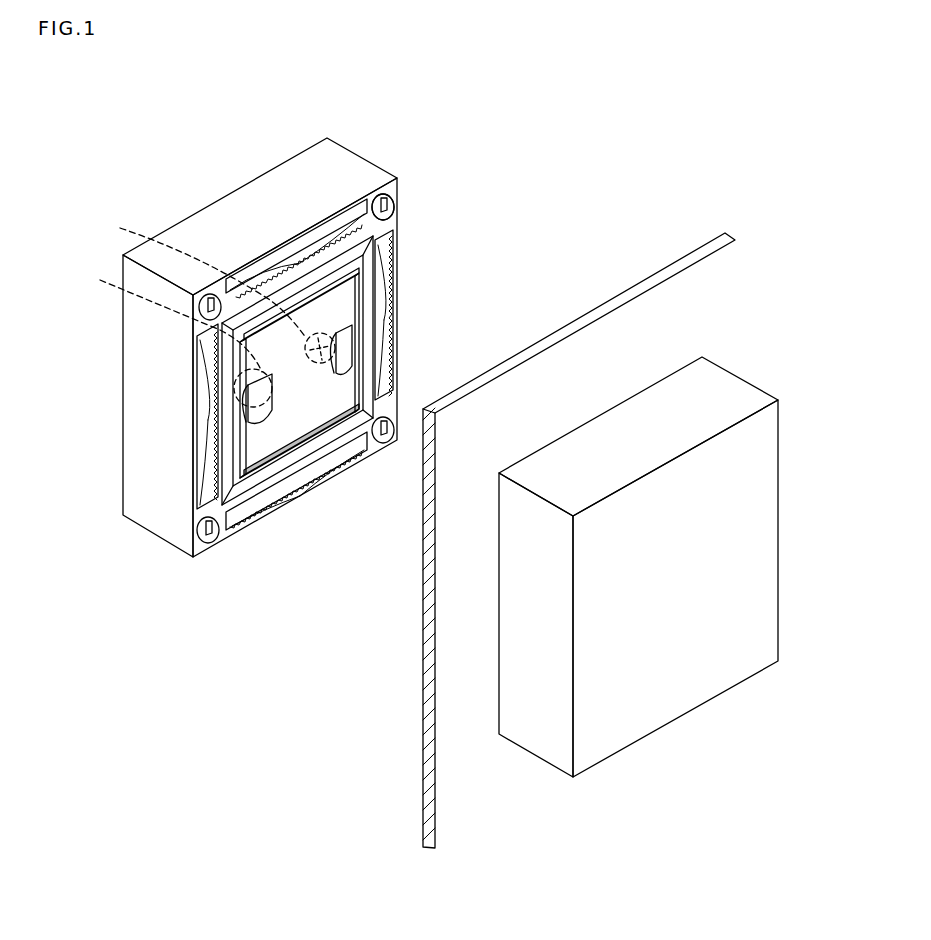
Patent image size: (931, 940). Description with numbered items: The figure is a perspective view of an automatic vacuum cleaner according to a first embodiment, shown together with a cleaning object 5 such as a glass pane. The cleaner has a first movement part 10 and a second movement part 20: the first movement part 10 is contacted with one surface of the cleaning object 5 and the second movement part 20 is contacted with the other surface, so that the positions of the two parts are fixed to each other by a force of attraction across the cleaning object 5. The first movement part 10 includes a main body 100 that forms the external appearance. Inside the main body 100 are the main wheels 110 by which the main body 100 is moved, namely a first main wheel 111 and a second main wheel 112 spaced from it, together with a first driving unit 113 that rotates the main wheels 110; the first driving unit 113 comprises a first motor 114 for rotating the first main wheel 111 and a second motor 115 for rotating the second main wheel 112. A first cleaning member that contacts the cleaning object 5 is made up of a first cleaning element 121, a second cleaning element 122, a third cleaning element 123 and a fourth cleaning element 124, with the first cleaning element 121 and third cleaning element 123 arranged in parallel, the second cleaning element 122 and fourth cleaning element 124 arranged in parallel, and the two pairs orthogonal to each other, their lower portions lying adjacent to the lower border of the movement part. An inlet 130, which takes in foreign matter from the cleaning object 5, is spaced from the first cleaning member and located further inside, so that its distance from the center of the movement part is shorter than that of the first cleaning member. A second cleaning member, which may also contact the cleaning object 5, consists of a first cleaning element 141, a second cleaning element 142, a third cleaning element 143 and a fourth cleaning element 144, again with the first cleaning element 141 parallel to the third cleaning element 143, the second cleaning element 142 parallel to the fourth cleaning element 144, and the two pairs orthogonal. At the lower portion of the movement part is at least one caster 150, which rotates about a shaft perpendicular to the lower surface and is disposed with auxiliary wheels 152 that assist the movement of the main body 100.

The cleaning object 5 is at (557, 363).
The first movement part 10 is at (430, 124).
The second movement part 20 is at (746, 357).
The main body 100 is at (195, 235).
The main wheels 110 is at (297, 455).
The first main wheel 111 is at (263, 405).
The second main wheel 112 is at (347, 427).
The first driving unit 113 is at (171, 289).
The first motor 114 is at (168, 314).
The second motor 115 is at (201, 272).
The first cleaning element 121 is at (297, 283).
The second cleaning element 122 is at (210, 365).
The third cleaning element 123 is at (243, 528).
The fourth cleaning element 124 is at (385, 343).
The inlet 130 is at (292, 296).
The first cleaning element 141 is at (342, 277).
The second cleaning element 142 is at (240, 420).
The third cleaning element 143 is at (253, 470).
The fourth cleaning element 144 is at (357, 302).
The caster 150 is at (385, 180).
The auxiliary wheels 152 is at (395, 209).